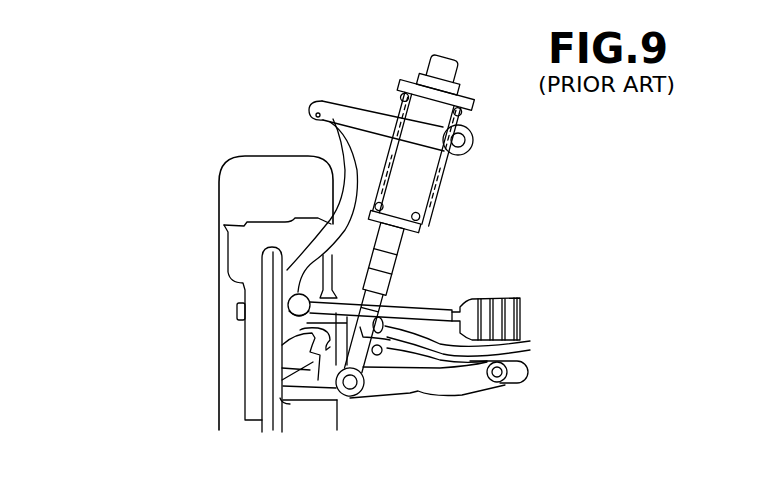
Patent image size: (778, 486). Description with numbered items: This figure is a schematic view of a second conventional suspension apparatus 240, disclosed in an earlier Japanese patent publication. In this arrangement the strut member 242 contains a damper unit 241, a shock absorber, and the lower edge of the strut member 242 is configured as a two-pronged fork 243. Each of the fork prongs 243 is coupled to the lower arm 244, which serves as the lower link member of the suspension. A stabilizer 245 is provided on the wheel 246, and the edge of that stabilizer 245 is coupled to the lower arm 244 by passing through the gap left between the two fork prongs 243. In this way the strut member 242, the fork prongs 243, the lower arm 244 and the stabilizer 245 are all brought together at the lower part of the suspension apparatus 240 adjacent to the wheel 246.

The suspension apparatus 240 is at (155, 81).
The damper unit 241 is at (413, 245).
The strut member 242 is at (452, 192).
The fork prongs 243 is at (414, 386).
The lower arm 244 is at (380, 387).
The stabilizer 245 is at (460, 352).
The wheel 246 is at (218, 324).